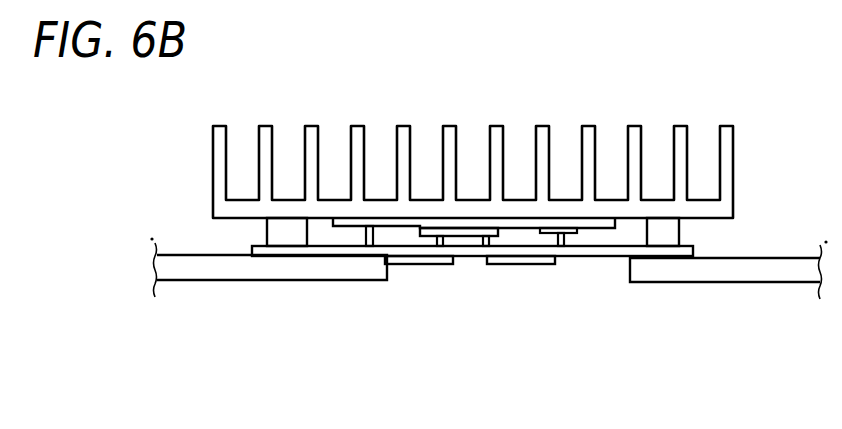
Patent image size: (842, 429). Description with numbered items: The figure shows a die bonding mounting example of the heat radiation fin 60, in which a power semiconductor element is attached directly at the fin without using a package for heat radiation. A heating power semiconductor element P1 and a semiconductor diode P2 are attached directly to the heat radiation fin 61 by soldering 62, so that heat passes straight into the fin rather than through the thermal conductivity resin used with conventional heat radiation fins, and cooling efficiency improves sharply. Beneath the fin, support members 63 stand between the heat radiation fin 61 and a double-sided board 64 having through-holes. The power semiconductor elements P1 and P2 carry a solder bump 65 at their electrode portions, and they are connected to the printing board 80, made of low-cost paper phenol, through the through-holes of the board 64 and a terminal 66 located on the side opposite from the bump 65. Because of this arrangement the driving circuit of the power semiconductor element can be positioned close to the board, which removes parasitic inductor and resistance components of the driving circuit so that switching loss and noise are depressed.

The heat radiation fin 60 is at (652, 106).
The heat radiation fin 61 is at (212, 143).
The soldering 62 is at (557, 224).
The support members 63 is at (277, 233).
The double-sided board having through-holes 64 is at (610, 257).
The solder bump 65 is at (500, 237).
The terminal 66 is at (495, 264).
The printing board 80 is at (208, 270).
The power semiconductor element P1 is at (463, 248).
The semiconductor diode P2 is at (570, 234).